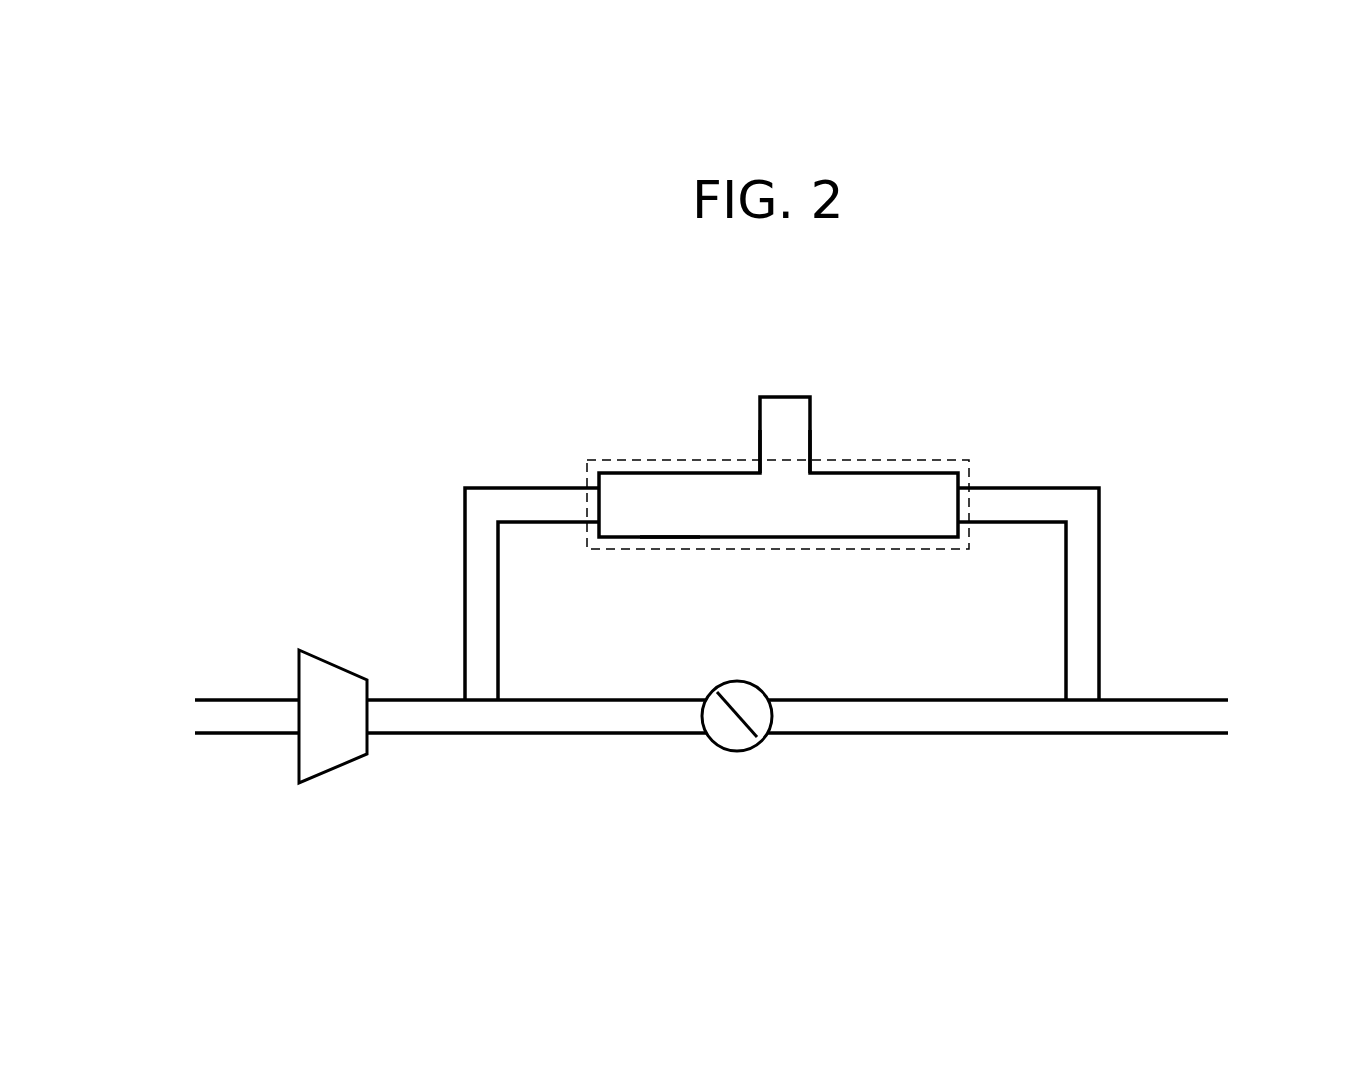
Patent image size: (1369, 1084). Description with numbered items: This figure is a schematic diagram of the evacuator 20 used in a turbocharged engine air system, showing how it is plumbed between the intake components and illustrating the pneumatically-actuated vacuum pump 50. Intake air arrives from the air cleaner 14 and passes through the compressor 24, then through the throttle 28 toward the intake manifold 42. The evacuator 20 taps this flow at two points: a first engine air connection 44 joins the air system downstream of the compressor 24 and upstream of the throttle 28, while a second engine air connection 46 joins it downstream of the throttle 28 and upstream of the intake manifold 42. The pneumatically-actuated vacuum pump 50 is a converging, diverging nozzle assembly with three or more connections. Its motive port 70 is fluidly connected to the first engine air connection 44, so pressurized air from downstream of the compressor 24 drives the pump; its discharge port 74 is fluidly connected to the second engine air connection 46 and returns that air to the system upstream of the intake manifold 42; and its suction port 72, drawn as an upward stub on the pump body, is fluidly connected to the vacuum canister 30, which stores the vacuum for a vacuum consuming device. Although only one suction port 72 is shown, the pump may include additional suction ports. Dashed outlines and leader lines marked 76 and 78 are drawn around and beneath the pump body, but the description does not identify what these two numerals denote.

The air cleaner 14 is at (184, 712).
The evacuator 20 is at (956, 398).
The compressor 24 is at (333, 716).
The throttle 28 is at (750, 682).
The vacuum canister 30 is at (778, 397).
The intake manifold 42 is at (1280, 698).
The first engine air connection 44 is at (500, 672).
The second engine air connection 46 is at (1100, 666).
The pneumatically-actuated vacuum pump 50 is at (933, 538).
The motive port 70 is at (585, 505).
The suction port 72 is at (812, 458).
The discharge port 74 is at (970, 475).
The housing 76 is at (680, 473).
The passageway wall 78 is at (663, 538).